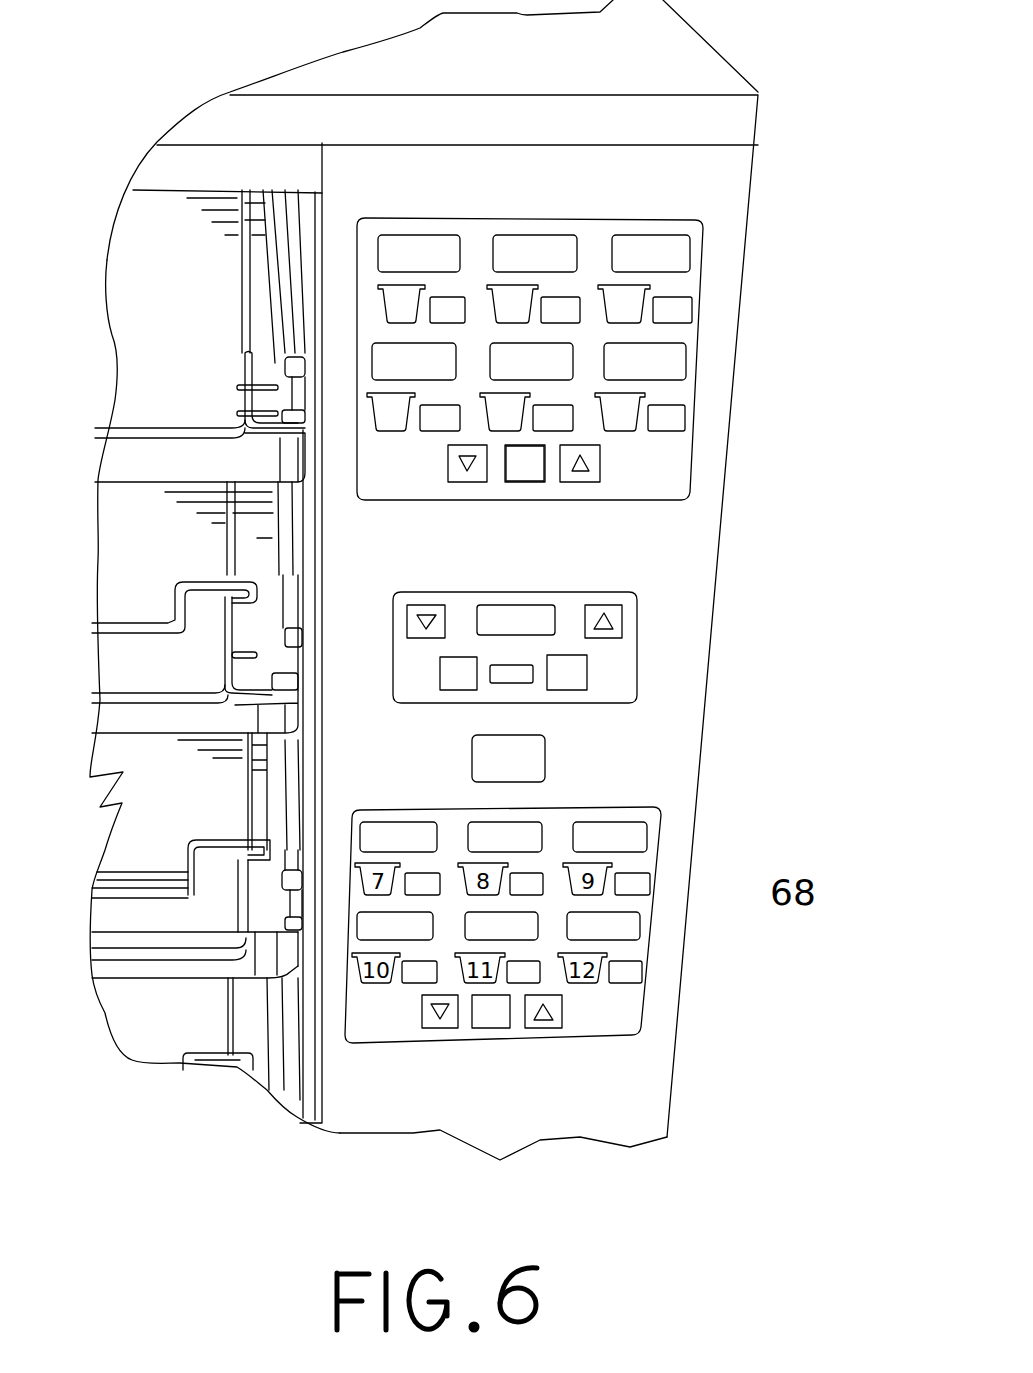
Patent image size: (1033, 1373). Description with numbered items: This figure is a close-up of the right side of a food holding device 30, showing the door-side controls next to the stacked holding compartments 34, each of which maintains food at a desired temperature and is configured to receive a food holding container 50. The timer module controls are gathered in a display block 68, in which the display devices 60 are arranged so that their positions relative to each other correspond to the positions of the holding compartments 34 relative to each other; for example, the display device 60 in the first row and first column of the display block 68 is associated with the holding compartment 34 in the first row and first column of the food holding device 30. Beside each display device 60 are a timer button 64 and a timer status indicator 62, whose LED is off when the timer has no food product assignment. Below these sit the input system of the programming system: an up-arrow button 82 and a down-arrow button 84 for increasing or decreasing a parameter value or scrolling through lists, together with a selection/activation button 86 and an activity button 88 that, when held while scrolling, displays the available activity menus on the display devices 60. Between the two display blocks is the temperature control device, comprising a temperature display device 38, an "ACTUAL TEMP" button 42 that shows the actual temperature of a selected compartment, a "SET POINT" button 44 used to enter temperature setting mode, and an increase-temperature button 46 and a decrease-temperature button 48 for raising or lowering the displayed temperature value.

The food holding device 30 is at (708, 77).
The holding compartment 34 is at (155, 252).
The food holding container 50 is at (138, 400).
The temperature display device 38 is at (508, 615).
The "ACTUAL TEMP" button 42 is at (463, 673).
The "SET POINT" button 44 is at (573, 677).
The increase-temperature button 46 is at (613, 633).
The decrease-temperature button 48 is at (420, 615).
The display device 60 is at (650, 255).
The timer status indicator 62 is at (677, 316).
The timer button 64 is at (617, 297).
The display block 68 is at (613, 529).
The up-arrow button 82 is at (694, 439).
The down-arrow button 84 is at (457, 470).
The selection/activation button 86 is at (527, 467).
The activity button 88 is at (525, 463).